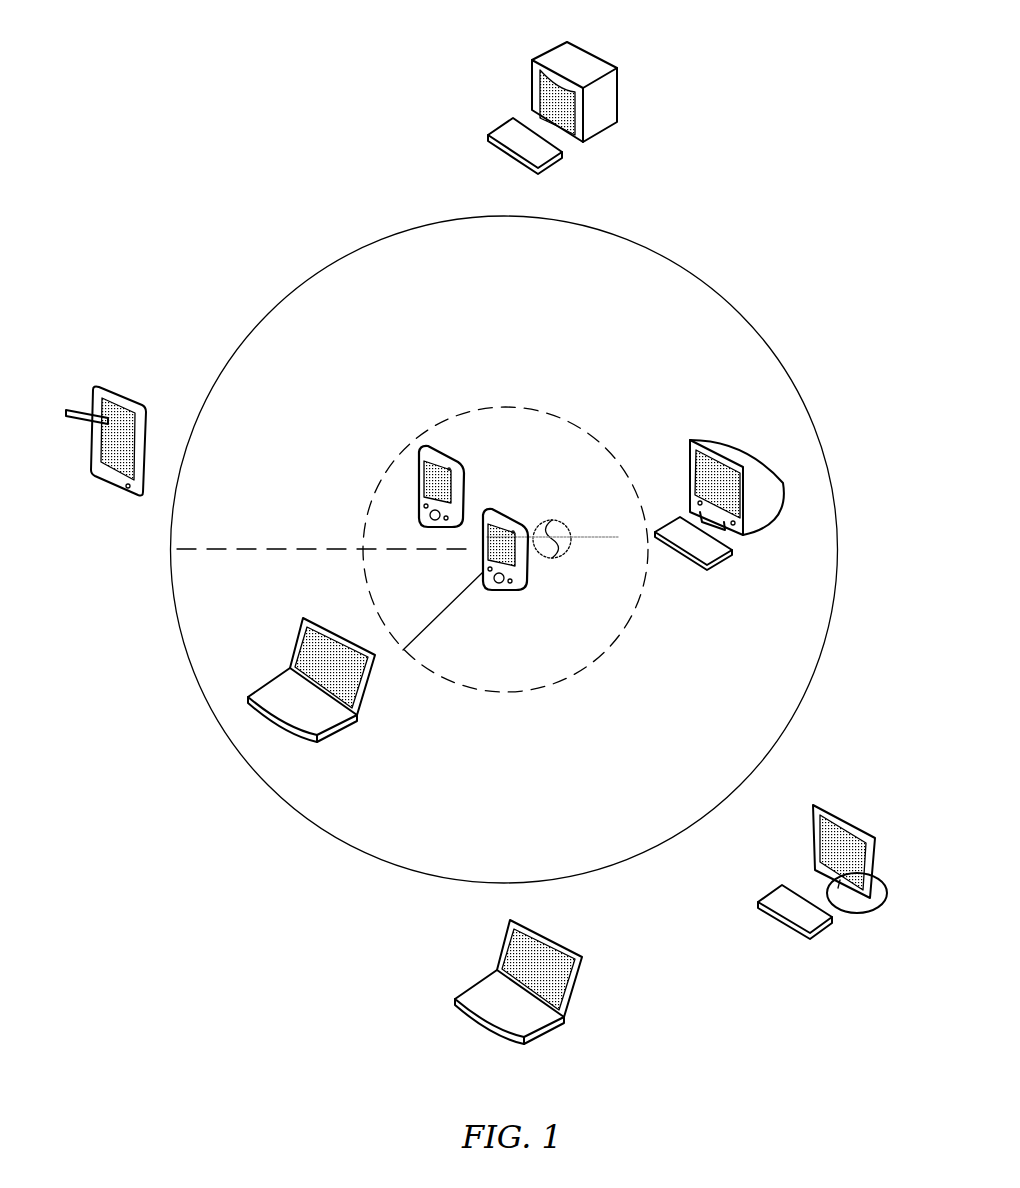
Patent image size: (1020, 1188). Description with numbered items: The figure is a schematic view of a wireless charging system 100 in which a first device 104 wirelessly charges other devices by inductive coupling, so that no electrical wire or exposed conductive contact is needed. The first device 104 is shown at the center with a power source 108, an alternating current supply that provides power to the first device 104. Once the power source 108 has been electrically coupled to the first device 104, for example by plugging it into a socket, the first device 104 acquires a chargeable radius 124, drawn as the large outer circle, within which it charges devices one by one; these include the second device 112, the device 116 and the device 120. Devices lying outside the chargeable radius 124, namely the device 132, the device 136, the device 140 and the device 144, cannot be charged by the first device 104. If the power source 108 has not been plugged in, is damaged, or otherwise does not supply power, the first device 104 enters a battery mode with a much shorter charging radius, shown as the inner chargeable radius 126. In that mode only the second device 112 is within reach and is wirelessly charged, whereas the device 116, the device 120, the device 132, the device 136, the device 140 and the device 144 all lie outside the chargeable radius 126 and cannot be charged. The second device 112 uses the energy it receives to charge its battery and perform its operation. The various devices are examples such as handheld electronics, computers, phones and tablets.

The wireless charging system 100 is at (708, 277).
The first device 104 is at (516, 592).
The power source 108 is at (552, 520).
The second device 112 is at (462, 460).
The device 116 is at (330, 628).
The device 120 is at (712, 438).
The chargeable radius 124 is at (272, 549).
The chargeable radius 126 is at (446, 615).
The device 132 is at (603, 63).
The device 136 is at (117, 390).
The device 140 is at (560, 942).
The device 144 is at (842, 812).